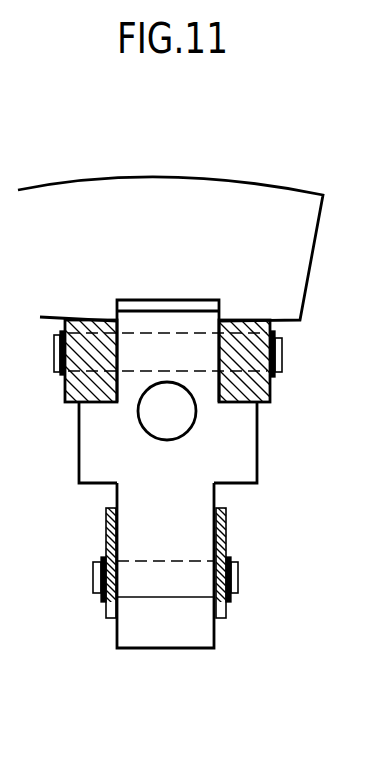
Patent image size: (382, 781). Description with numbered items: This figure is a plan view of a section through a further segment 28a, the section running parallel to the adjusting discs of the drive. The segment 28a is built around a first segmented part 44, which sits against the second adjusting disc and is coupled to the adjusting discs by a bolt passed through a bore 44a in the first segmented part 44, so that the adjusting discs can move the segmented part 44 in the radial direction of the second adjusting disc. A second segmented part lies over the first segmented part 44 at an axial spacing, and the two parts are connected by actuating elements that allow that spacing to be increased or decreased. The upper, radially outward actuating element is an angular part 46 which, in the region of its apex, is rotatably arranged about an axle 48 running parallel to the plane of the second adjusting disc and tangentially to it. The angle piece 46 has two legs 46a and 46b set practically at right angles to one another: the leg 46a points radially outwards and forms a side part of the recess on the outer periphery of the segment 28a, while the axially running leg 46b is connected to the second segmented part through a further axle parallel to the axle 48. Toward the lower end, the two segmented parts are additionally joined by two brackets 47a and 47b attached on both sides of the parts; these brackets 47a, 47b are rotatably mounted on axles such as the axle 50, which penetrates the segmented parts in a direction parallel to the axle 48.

The leg of angle piece 46a is at (271, 197).
The angular part 46 is at (247, 323).
The axially running leg 46b is at (97, 322).
The axle 48 is at (283, 351).
The further segment 28a is at (72, 432).
The bore 44a is at (170, 427).
The first segmented part 44 is at (88, 483).
The bracket 47a is at (106, 532).
The bracket 47b is at (227, 515).
The axle 50 is at (238, 581).